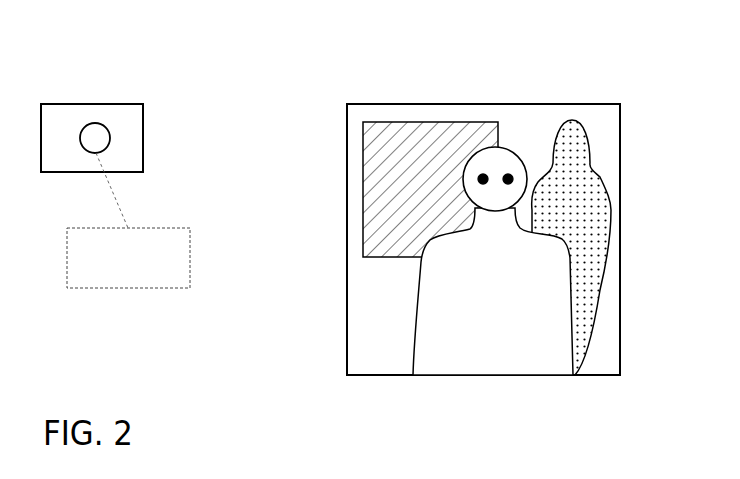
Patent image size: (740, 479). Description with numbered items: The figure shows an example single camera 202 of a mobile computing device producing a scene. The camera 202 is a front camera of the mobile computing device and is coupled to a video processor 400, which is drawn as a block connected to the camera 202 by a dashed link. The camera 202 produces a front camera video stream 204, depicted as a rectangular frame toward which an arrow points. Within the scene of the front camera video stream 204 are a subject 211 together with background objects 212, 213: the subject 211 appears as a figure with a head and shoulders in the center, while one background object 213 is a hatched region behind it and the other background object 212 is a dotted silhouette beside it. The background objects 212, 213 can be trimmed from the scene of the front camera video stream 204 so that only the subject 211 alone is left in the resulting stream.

The single camera 202 is at (90, 123).
The front camera video stream 204 is at (378, 59).
The subject 211 is at (516, 150).
The background object 212 is at (614, 205).
The background object 213 is at (448, 122).
The video processor 400 is at (188, 258).